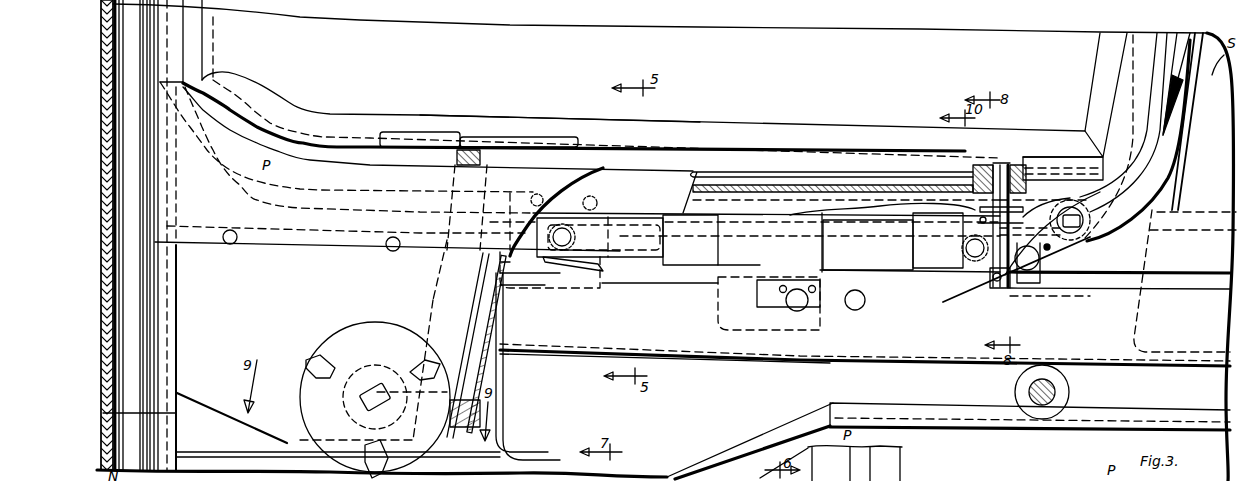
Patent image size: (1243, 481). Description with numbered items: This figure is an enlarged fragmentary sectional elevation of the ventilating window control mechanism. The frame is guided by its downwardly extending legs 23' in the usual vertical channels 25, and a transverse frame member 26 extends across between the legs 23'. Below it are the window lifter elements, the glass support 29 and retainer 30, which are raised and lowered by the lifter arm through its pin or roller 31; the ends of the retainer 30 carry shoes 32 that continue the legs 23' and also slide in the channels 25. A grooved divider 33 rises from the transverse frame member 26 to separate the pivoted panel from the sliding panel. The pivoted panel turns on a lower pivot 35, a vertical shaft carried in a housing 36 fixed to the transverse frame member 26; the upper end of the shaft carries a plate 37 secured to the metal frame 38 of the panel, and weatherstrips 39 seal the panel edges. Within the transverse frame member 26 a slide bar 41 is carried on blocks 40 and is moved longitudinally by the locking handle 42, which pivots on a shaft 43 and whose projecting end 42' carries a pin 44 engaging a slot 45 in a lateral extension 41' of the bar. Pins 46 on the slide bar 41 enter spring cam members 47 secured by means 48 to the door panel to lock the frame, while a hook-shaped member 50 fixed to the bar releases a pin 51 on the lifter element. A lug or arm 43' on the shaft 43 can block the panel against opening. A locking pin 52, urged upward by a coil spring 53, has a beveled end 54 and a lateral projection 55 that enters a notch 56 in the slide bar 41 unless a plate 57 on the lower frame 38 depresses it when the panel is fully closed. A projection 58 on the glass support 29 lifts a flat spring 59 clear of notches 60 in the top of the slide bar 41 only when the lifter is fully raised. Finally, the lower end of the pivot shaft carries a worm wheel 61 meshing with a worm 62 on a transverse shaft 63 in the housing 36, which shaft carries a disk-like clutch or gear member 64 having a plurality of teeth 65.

The channels 25 is at (100, 171).
The legs 23' is at (116, 235).
The transverse frame member 26 is at (676, 184).
The glass support 29 is at (1168, 305).
The retainer 30 is at (1100, 400).
The pin or roller 31 is at (1029, 389).
The shoes 32 is at (150, 440).
The divider 33 is at (1193, 108).
The lower pivot 35 is at (486, 150).
The housing 36 is at (477, 362).
The plate 37 is at (398, 133).
The metal frame 38 is at (676, 130).
The weatherstrips 39 is at (1033, 170).
The blocks 40 is at (686, 248).
The slide bar 41 is at (910, 274).
The lateral extension 41' is at (1052, 254).
The control or locking handle 42 is at (1153, 140).
The end of handle 42' is at (1065, 254).
The shaft 43 is at (1070, 175).
The lug or arm 43' is at (1182, 281).
The pin 44 is at (1043, 283).
The slot 45 is at (1020, 283).
The pins 46 is at (563, 250).
The spring cam members 47 is at (958, 252).
The mounting means 48 is at (608, 249).
The hook-shaped member 50 is at (799, 330).
The pin 51 is at (858, 310).
The locking pin 52 is at (982, 165).
The coil spring 53 is at (980, 215).
The beveled end 54 is at (1017, 165).
The projection 55 is at (975, 258).
The notch 56 is at (1045, 240).
The plate 57 is at (999, 165).
The projection 58 is at (826, 243).
The flat spring 59 is at (812, 210).
The notches 60 is at (738, 230).
The worm wheel 61 is at (472, 428).
The worm 62 is at (390, 370).
The shaft 63 is at (362, 400).
The clutch or gear member 64 is at (378, 330).
The teeth 65 is at (332, 368).